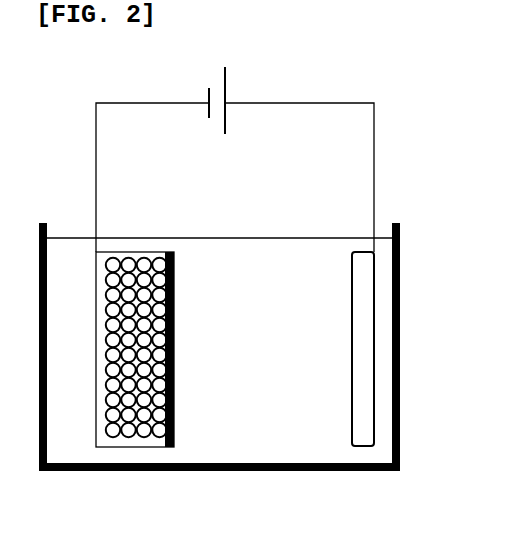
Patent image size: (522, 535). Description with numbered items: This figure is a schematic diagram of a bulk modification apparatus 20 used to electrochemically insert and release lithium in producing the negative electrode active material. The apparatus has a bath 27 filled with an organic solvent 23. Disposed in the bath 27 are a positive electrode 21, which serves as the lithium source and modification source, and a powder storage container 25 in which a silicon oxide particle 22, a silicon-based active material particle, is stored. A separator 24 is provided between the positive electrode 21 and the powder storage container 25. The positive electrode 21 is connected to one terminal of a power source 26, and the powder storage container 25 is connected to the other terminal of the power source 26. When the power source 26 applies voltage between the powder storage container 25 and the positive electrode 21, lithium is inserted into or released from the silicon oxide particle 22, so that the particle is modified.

The bulk modification apparatus 20 is at (87, 85).
The positive electrode 21 is at (360, 302).
The silicon oxide particle 22 is at (130, 405).
The organic solvent 23 is at (258, 262).
The separator 24 is at (186, 277).
The powder storage container 25 is at (127, 252).
The power source 26 is at (240, 74).
The bath 27 is at (330, 484).